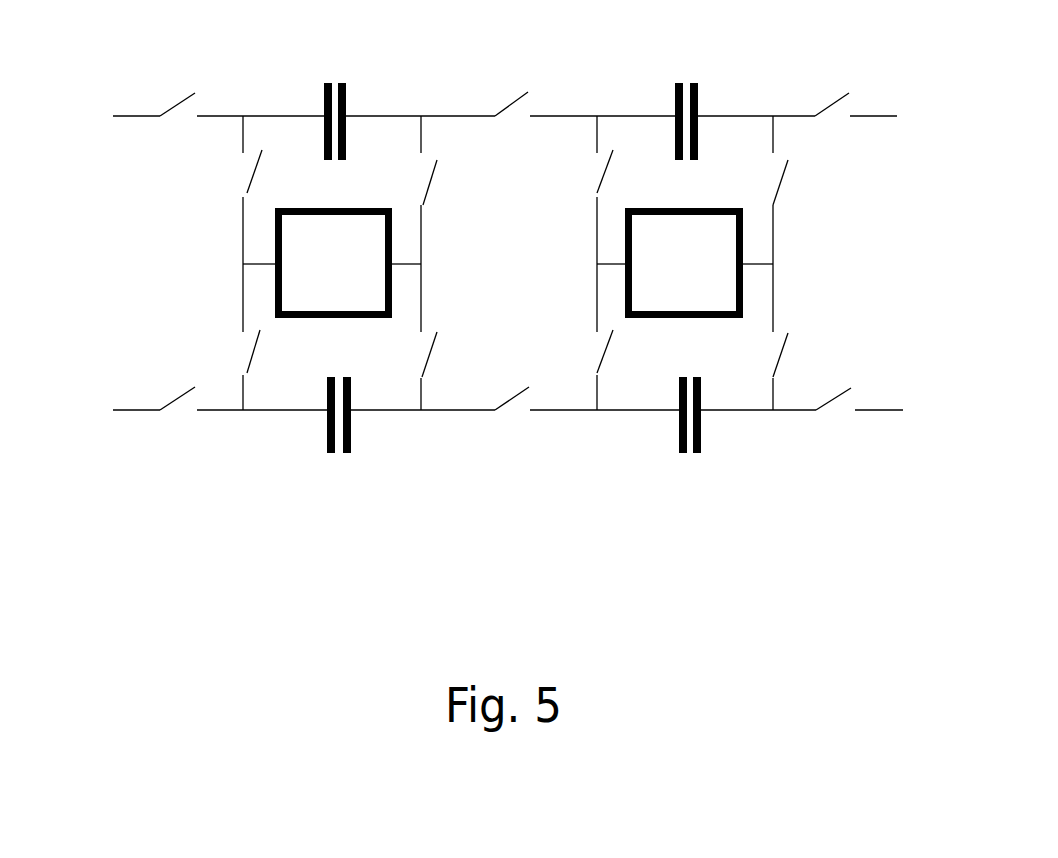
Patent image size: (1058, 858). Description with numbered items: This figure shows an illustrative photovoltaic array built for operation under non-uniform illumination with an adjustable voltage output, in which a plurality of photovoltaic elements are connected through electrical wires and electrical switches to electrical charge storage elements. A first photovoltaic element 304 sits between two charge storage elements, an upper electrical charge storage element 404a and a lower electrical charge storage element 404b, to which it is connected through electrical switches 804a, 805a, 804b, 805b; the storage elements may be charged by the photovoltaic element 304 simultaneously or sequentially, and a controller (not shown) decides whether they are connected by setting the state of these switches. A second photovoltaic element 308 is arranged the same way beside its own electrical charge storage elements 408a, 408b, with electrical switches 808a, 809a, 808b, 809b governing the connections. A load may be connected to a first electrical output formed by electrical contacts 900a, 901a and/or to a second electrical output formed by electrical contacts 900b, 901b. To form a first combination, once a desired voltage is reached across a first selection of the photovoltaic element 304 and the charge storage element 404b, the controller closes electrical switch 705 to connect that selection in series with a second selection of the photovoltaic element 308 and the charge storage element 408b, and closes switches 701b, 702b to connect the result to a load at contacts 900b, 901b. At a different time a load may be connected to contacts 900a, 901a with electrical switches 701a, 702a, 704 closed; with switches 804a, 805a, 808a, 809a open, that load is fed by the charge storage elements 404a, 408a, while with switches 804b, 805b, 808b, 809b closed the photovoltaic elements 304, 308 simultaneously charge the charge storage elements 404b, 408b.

The electrical contact 900a is at (102, 111).
The electrical contact 900b is at (102, 409).
The electrical contact 901a is at (902, 116).
The electrical contact 901b is at (906, 416).
The electrical switch 701a is at (184, 92).
The electrical switch 701b is at (179, 415).
The electrical switch 704 is at (505, 92).
The electrical switch 705 is at (515, 415).
The electrical switch 702a is at (837, 90).
The electrical switch 702b is at (843, 417).
The electrical charge storage element 404a is at (333, 72).
The electrical charge storage element 404b is at (331, 445).
The electrical charge storage element 408a is at (688, 72).
The electrical charge storage element 408b is at (685, 445).
The electrical switch 804a is at (243, 172).
The electrical switch 804b is at (245, 350).
The electrical switch 805a is at (438, 175).
The electrical switch 805b is at (443, 343).
The electrical switch 808a is at (595, 176).
The electrical switch 808b is at (597, 350).
The electrical switch 809a is at (790, 177).
The electrical switch 809b is at (792, 343).
The photovoltaic element 304 is at (334, 263).
The photovoltaic element 308 is at (684, 263).